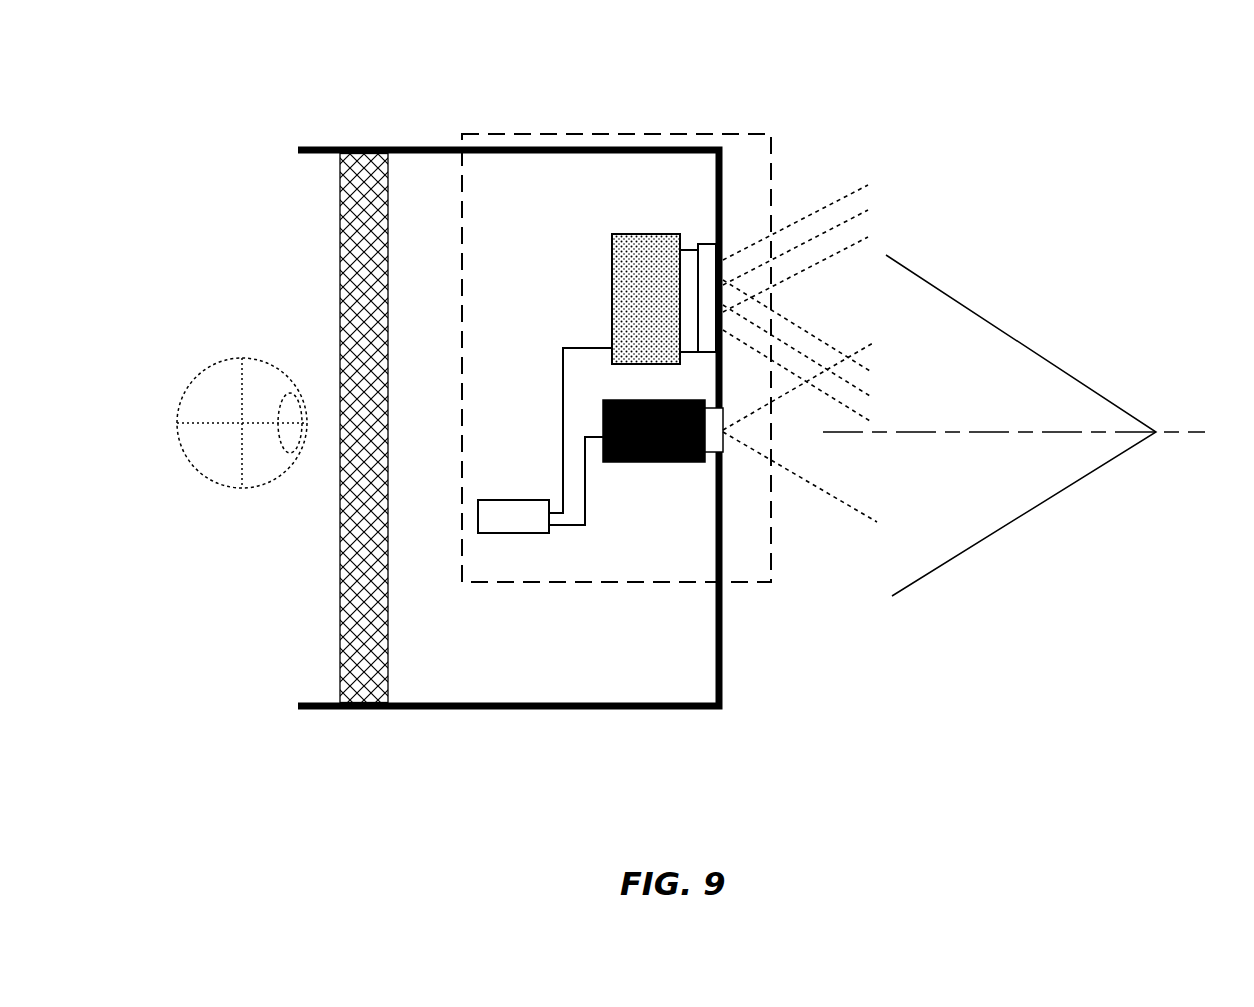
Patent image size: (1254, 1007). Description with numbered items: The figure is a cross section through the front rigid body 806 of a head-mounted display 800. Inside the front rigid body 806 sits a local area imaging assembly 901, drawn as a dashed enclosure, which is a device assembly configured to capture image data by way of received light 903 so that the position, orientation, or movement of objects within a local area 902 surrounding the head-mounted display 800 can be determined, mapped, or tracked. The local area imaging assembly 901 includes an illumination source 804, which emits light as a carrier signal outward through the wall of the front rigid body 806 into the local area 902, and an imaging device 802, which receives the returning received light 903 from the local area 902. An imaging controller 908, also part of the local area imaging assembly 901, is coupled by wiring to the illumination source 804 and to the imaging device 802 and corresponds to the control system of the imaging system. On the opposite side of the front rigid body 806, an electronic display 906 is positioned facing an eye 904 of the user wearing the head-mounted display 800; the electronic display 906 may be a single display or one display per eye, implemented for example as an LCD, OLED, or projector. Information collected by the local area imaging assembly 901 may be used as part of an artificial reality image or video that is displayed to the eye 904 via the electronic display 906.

The head-mounted display 800 is at (228, 52).
The imaging device 802 is at (620, 462).
The illumination source 804 is at (648, 234).
The front rigid body 806 is at (723, 665).
The local area imaging assembly 901 is at (565, 583).
The local area 902 is at (995, 535).
The received light 903 is at (800, 477).
The eye 904 is at (230, 487).
The electronic display 906 is at (388, 620).
The imaging controller 908 is at (505, 535).